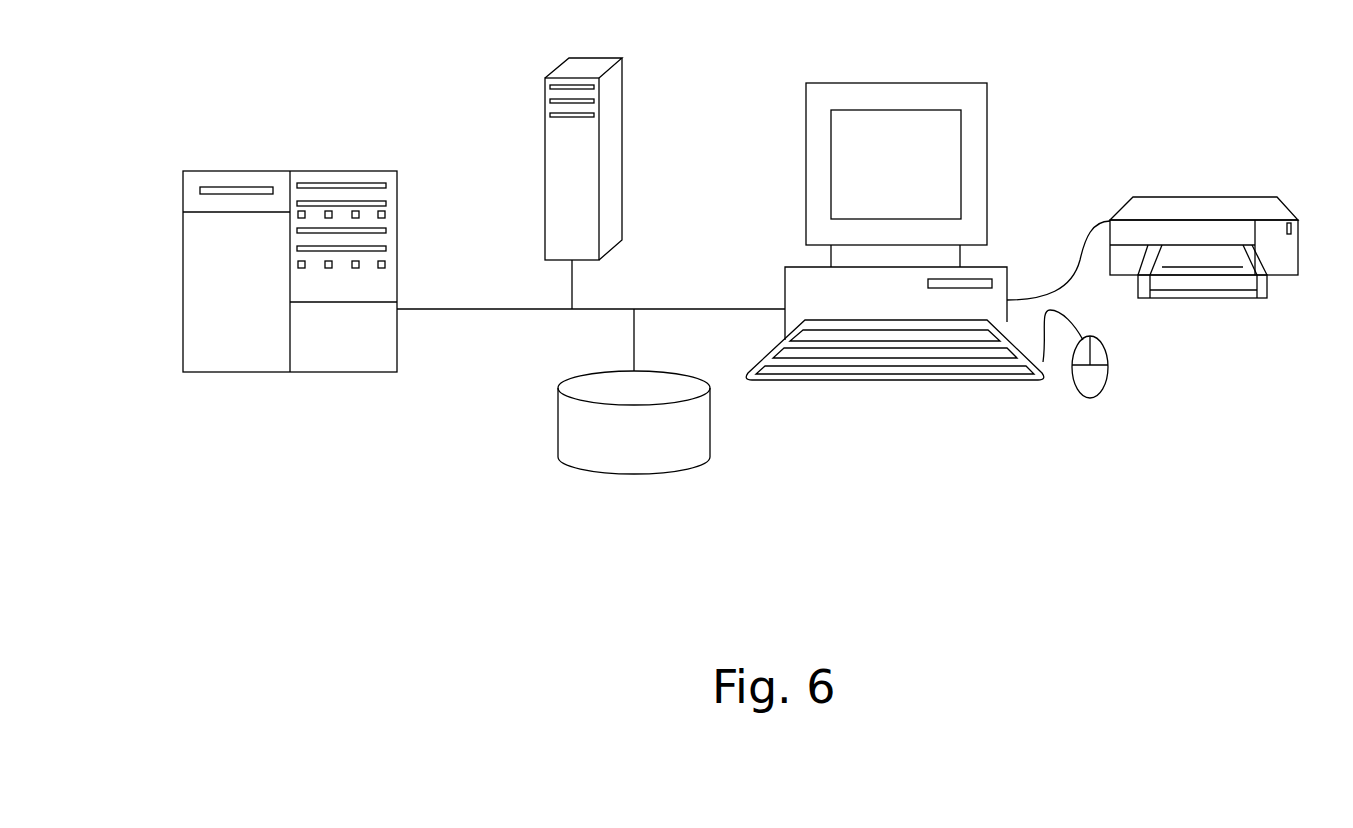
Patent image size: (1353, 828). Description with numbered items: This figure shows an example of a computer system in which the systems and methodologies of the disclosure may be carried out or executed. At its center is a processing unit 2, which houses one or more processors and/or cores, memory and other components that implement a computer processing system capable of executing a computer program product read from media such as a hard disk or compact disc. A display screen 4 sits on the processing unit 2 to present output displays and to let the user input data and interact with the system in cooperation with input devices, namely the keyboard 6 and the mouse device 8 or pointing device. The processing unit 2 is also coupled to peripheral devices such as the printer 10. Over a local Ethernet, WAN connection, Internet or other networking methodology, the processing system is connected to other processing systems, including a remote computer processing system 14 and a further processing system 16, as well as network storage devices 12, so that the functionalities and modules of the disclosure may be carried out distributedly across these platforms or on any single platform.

The processing unit 2 is at (790, 291).
The display screen 4 is at (987, 159).
The keyboard 6 is at (953, 380).
The mouse device 8 is at (1108, 382).
The printer 10 is at (1203, 197).
The network storage devices 12 is at (650, 473).
The remote computer processing system 14 is at (623, 147).
The processing system 16 is at (333, 171).